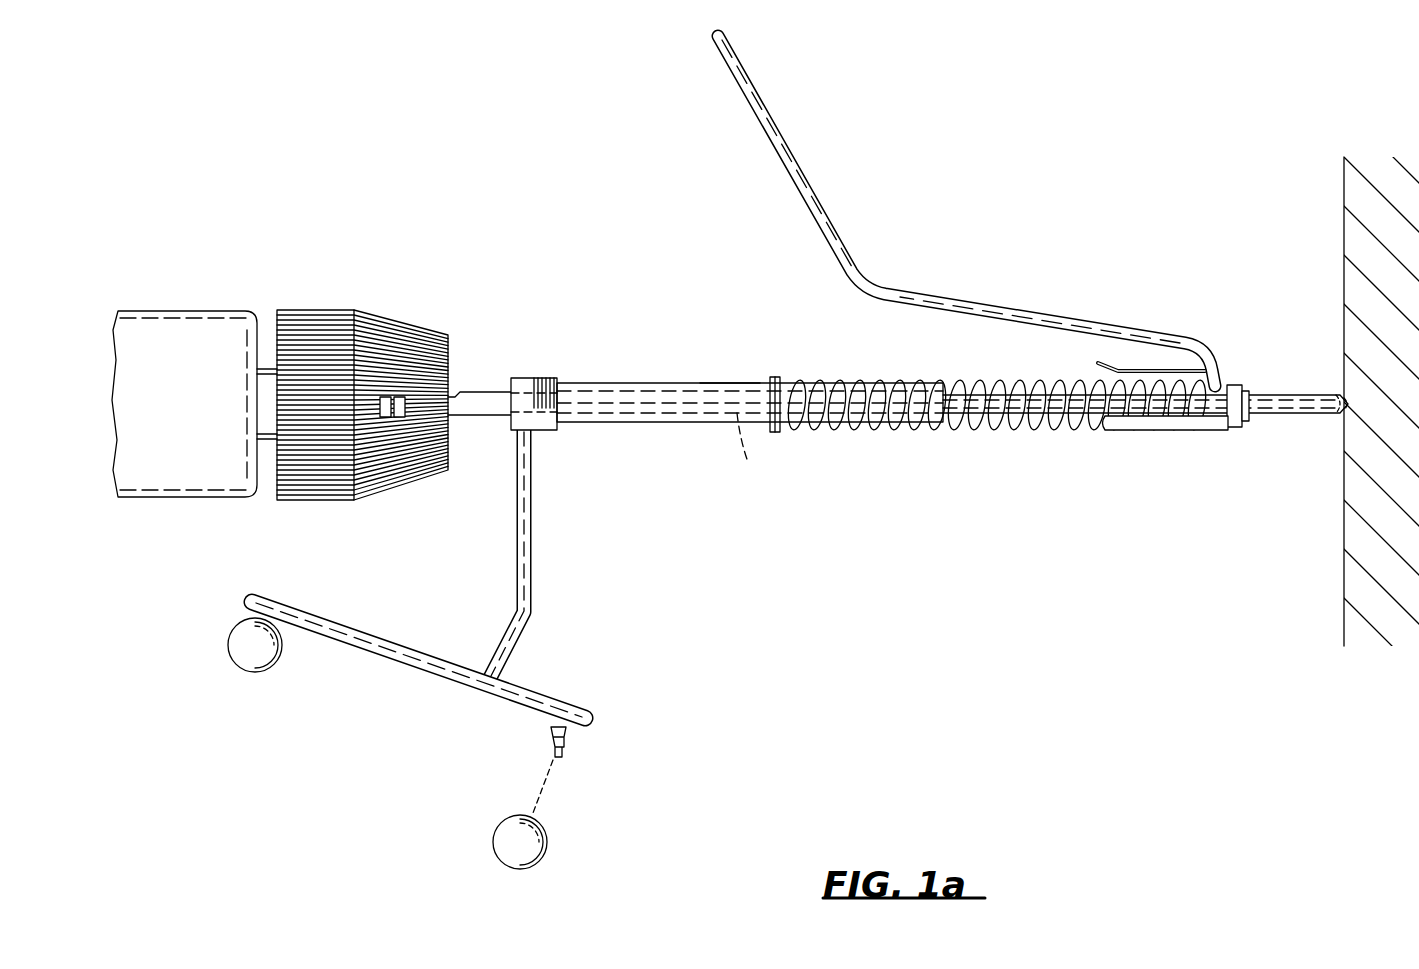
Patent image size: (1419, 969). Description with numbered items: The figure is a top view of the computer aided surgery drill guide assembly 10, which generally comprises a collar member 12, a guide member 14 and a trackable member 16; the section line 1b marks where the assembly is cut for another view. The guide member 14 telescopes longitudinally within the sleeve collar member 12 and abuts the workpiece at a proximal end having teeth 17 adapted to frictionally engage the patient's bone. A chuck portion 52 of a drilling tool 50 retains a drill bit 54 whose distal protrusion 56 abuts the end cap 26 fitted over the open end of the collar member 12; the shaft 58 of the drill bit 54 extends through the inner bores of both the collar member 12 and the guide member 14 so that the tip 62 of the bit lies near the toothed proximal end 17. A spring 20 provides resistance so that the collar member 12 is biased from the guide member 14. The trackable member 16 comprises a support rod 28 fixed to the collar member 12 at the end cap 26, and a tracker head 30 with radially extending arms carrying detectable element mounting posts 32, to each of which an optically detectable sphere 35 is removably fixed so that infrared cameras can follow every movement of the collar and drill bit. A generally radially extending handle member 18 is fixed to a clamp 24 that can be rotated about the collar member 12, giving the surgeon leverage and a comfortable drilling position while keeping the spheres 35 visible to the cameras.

The CAS drill guide assembly 10 is at (795, 505).
The collar member 12 is at (608, 370).
The guide member 14 is at (1060, 430).
The trackable member 16 is at (368, 707).
The teeth 17 is at (1351, 390).
The handle member 18 is at (1045, 318).
The spring 20 is at (883, 430).
The clamp 24 is at (1222, 430).
The end cap 26 is at (527, 378).
The support rod 28 is at (528, 512).
The tracker head 30 is at (357, 653).
The detectable element mounting post 32 is at (557, 757).
The optically detectable sphere 35 is at (230, 647).
The drilling tool 50 is at (177, 300).
The chuck portion 52 is at (385, 337).
The drill bit 54 is at (733, 375).
The distal protrusion 56 is at (475, 417).
The shaft 58 is at (748, 462).
The tip 62 is at (1336, 423).
The section line 1b is at (506, 440).